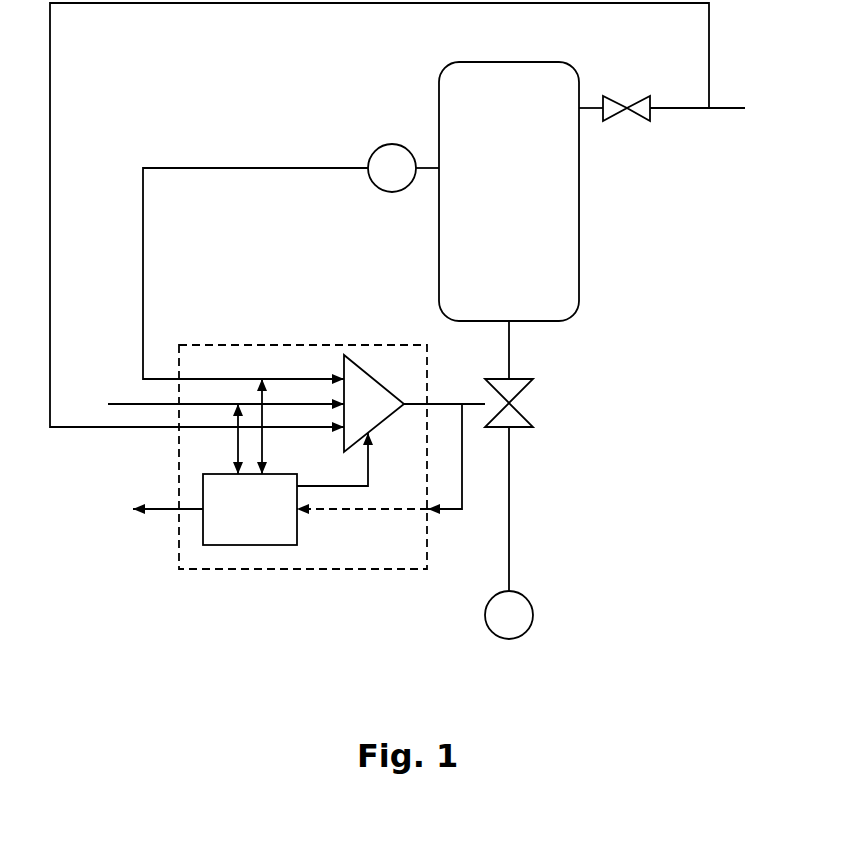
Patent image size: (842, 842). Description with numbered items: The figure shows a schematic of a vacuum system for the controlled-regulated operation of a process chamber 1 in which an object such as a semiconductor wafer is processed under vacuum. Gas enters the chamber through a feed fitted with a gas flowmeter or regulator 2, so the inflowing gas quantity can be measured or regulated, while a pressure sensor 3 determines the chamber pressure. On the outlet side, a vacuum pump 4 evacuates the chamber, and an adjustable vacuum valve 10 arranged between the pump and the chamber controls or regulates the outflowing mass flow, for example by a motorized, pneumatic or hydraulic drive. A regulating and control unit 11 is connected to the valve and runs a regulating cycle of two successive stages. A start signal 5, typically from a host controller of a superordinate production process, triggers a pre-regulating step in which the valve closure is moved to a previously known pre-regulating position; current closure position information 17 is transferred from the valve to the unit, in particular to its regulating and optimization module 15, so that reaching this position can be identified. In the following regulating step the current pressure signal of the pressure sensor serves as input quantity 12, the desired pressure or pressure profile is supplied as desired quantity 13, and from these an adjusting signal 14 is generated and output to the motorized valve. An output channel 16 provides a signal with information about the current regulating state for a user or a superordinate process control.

The process chamber 1 is at (486, 175).
The gas flowmeter or regulator 2 is at (646, 84).
The pressure sensor 3 is at (381, 148).
The vacuum pump 4 is at (535, 620).
The start signal 5 is at (397, 217).
The adjustable vacuum valve 10 is at (536, 456).
The regulating and control unit 11 is at (303, 430).
The input quantity 12 is at (255, 276).
The desired quantity 13 is at (208, 384).
The adjusting signal 14 is at (444, 538).
The regulating and optimization module 15 is at (215, 550).
The output channel 16 is at (144, 528).
The closure position information 17 is at (379, 514).